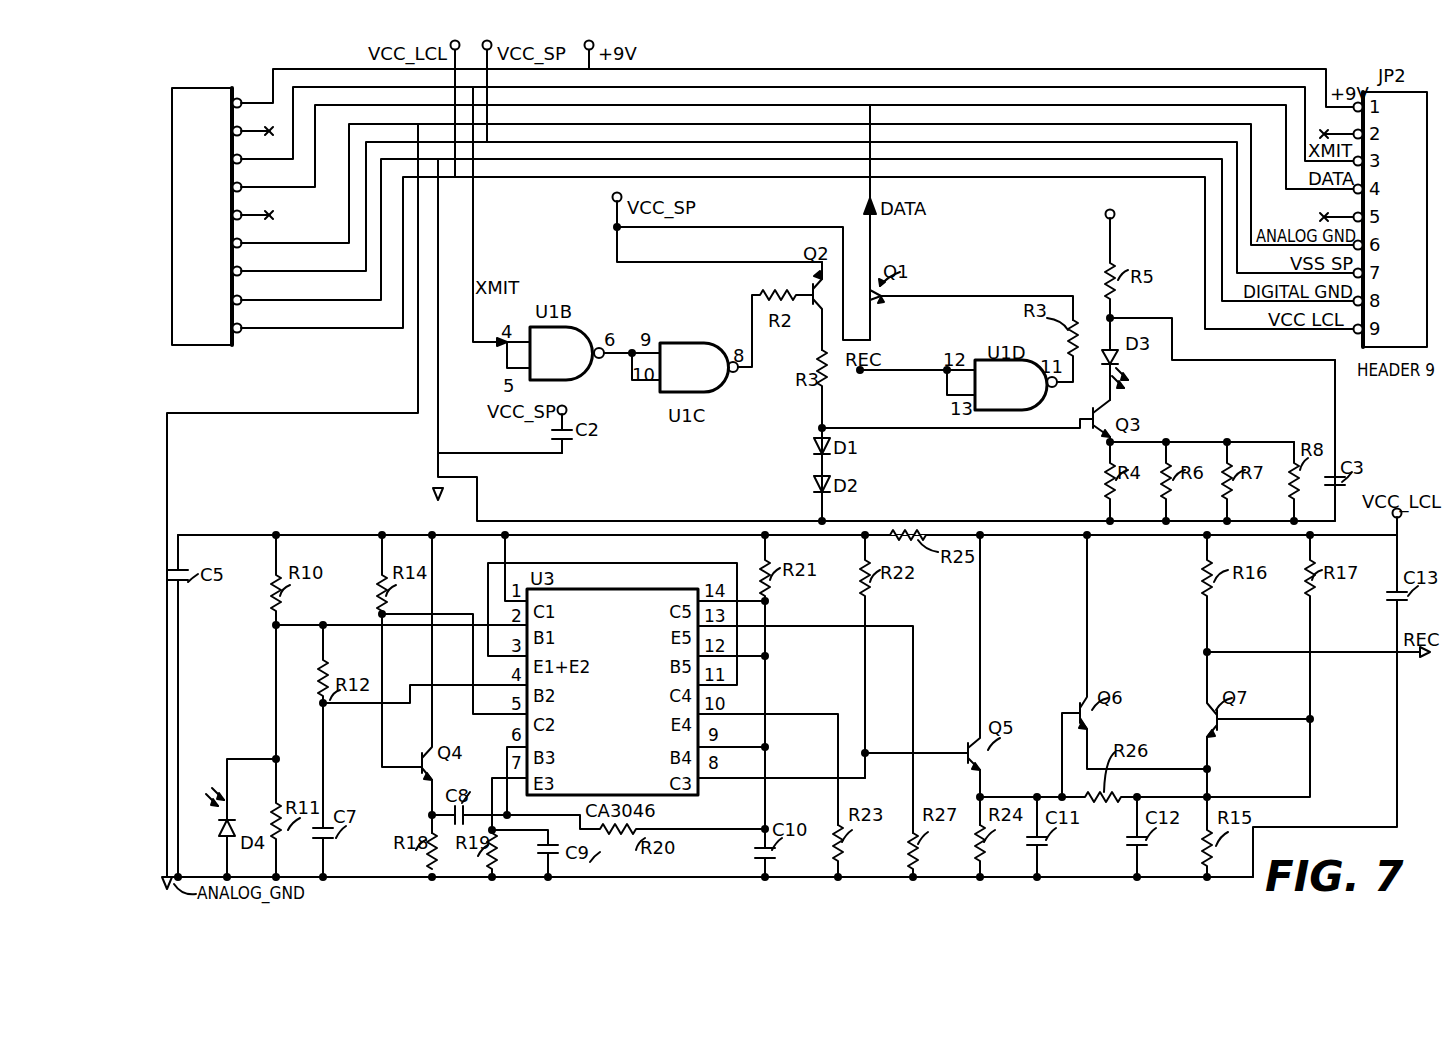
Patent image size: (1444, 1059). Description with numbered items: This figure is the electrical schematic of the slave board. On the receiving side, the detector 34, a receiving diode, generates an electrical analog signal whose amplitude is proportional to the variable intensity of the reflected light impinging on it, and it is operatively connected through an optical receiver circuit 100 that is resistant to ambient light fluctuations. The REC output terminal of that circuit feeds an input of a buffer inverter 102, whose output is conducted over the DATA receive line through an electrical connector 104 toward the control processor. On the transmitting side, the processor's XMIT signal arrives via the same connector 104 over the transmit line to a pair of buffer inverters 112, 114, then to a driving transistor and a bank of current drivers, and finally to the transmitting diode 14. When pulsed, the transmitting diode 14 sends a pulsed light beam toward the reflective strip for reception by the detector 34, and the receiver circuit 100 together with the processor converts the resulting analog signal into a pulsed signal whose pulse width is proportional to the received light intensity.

The optical receiver circuit 100 is at (286, 514).
The buffer inverter 102 is at (977, 358).
The electrical connector 104 is at (232, 340).
The buffer inverter 112 is at (584, 337).
The buffer inverter 114 is at (708, 345).
The transmitting diode 14 is at (1142, 368).
The detector 34 is at (221, 836).